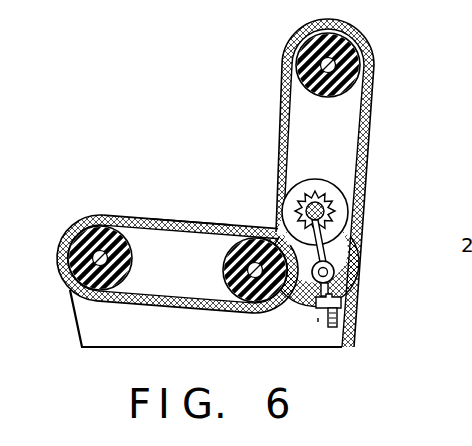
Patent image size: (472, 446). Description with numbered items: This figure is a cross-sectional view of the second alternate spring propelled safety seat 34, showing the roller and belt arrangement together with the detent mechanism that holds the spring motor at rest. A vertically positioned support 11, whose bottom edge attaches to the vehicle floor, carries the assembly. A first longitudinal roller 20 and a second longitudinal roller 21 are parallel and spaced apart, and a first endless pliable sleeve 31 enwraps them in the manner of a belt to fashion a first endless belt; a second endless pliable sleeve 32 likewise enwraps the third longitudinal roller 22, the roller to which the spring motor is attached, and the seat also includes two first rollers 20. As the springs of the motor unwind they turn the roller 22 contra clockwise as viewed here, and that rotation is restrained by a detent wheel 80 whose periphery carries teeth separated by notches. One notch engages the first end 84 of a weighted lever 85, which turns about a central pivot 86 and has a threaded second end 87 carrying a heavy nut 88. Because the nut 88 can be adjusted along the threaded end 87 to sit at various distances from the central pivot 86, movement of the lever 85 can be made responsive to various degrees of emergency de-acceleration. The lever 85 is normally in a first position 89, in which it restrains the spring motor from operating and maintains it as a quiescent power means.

The support 11 is at (74, 313).
The first longitudinal roller 20 is at (63, 248).
The second longitudinal roller 21 is at (254, 235).
The third longitudinal roller 22 is at (339, 189).
The first endless pliable sleeve 31 is at (163, 222).
The second endless pliable sleeve 32 is at (280, 108).
The second alternate spring propelled safety seat 34 is at (181, 220).
The detent wheel 80 is at (337, 211).
The first end of weighted lever 84 is at (328, 248).
The weighted lever 85 is at (346, 292).
The central pivot 86 is at (336, 272).
The threaded second end 87 is at (338, 326).
The heavy nut 88 is at (343, 303).
The first position 89 is at (318, 320).